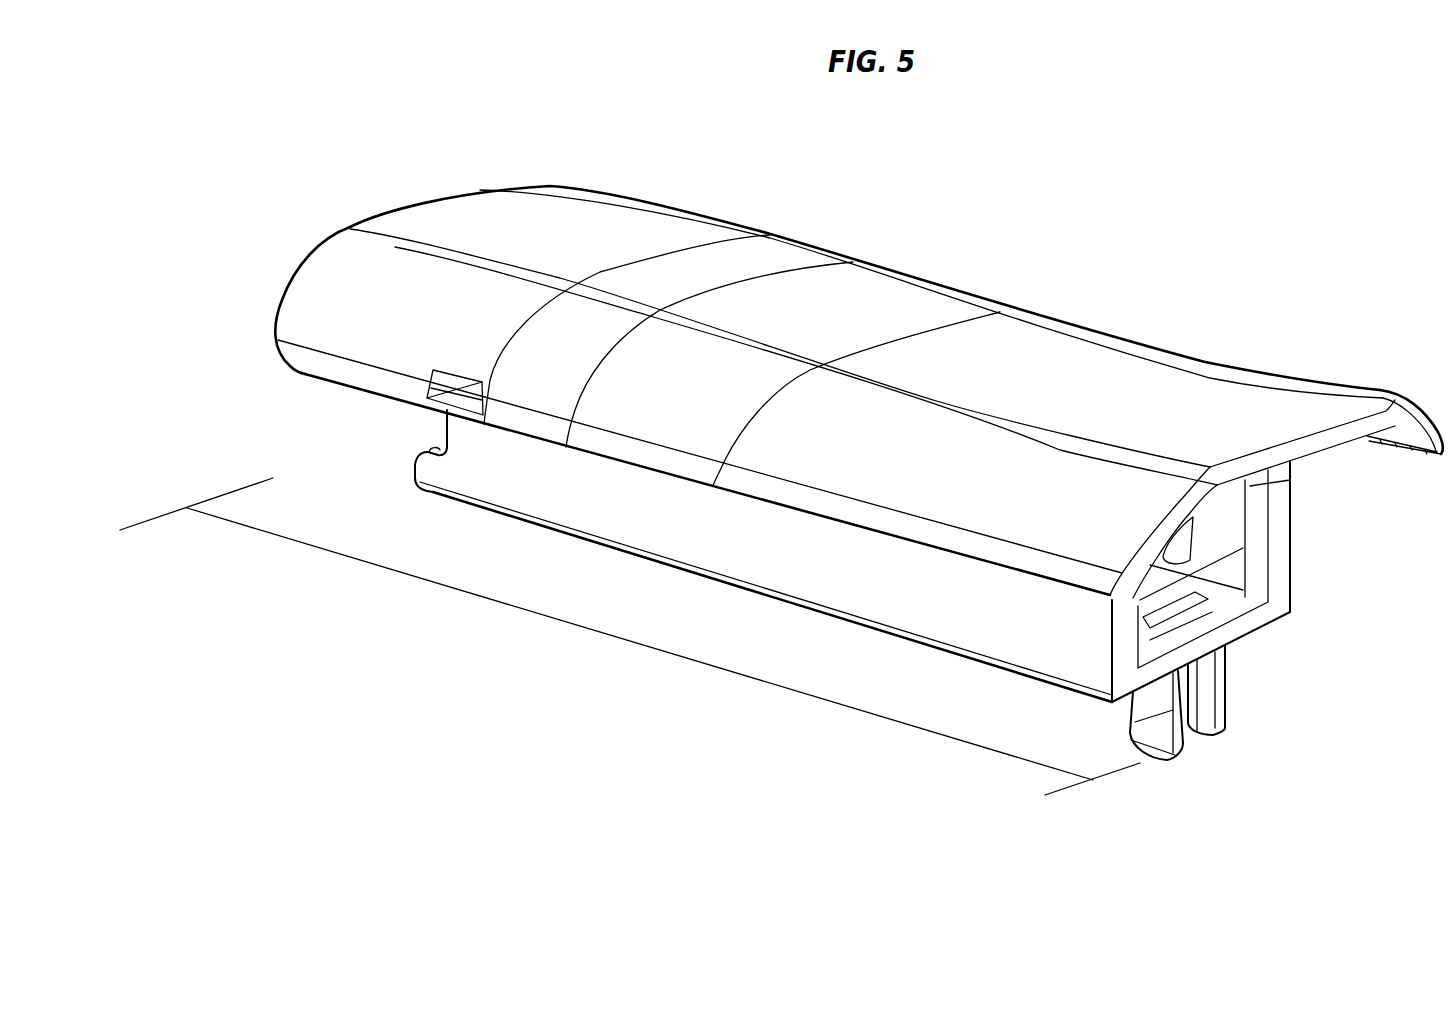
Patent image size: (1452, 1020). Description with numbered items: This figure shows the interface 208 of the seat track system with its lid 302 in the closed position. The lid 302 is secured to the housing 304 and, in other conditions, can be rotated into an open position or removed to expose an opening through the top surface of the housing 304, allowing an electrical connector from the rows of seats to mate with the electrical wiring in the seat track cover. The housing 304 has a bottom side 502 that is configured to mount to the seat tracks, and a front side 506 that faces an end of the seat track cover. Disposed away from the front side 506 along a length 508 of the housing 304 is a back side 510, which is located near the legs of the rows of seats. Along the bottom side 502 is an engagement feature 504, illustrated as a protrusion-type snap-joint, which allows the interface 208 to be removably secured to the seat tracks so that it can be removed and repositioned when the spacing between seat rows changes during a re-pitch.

The interface 208 is at (956, 200).
The lid 302 is at (1167, 396).
The housing 304 is at (787, 566).
The bottom side 502 is at (1037, 676).
The engagement feature 504 is at (1180, 748).
The front side 506 is at (1347, 701).
The length 508 is at (598, 630).
The back side 510 is at (395, 425).